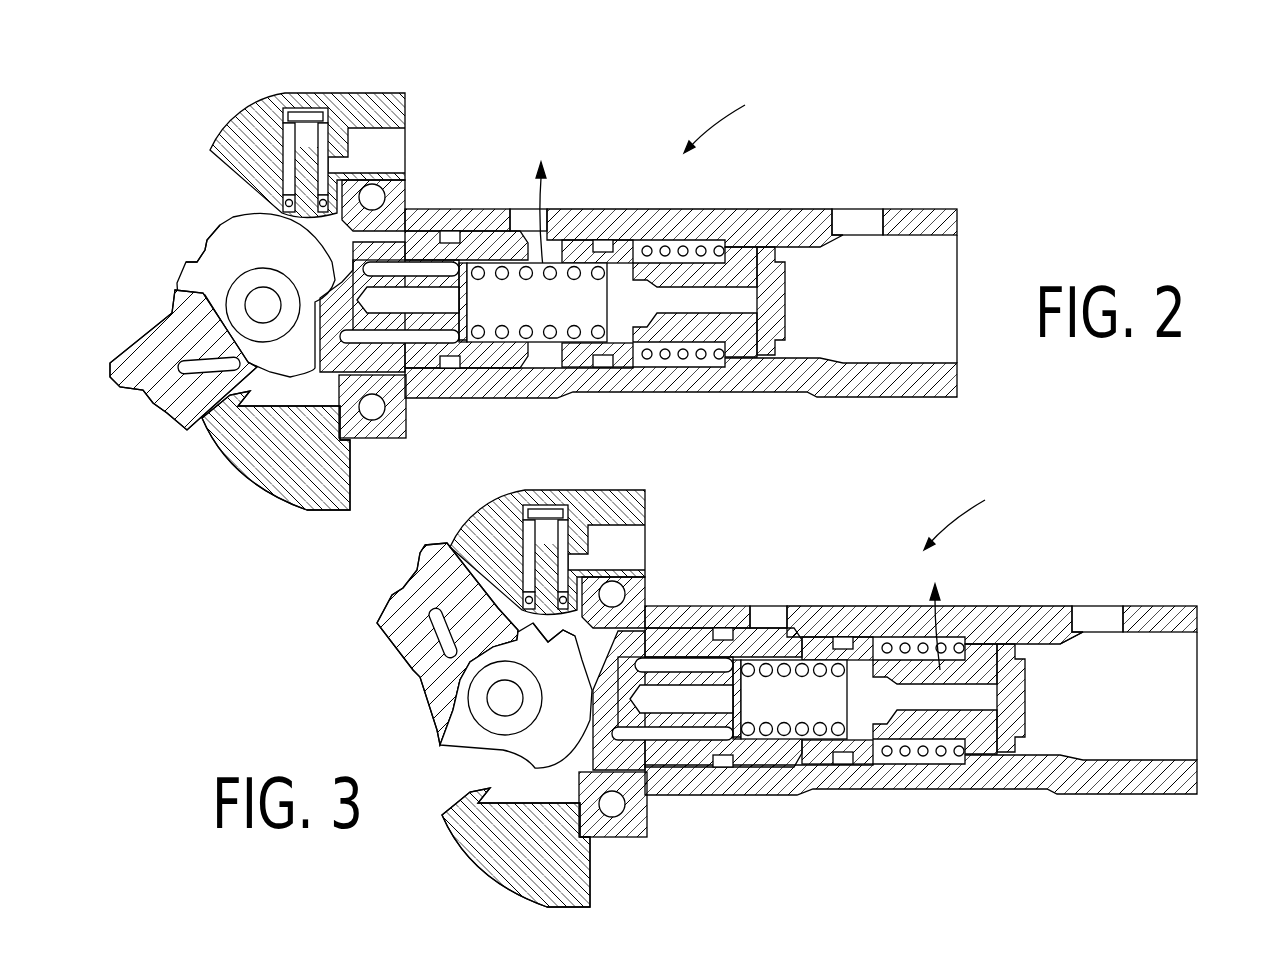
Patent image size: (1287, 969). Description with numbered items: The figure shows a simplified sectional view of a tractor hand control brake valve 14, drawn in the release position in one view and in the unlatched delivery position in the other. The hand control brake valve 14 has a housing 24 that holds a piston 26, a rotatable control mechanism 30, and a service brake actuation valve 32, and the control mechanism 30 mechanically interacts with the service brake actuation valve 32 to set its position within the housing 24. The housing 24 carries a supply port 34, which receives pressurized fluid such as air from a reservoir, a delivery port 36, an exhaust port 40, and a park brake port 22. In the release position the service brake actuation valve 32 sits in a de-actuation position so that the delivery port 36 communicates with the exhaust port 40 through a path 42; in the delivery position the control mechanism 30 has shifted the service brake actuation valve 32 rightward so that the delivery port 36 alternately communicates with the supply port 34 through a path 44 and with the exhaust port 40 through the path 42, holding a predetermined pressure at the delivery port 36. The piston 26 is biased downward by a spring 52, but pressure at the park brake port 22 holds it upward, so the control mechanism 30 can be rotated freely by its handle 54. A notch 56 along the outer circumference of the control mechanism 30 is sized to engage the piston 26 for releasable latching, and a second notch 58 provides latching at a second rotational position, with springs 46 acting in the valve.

In FIG. 2, the hand control brake valve 14 is at (729, 117).
In FIG. 3, the hand control brake valve 14 is at (970, 513).
In FIG. 2, the park brake port 22 is at (398, 137).
In FIG. 3, the park brake port 22 is at (638, 534).
In FIG. 2, the housing 24 is at (942, 210).
In FIG. 3, the housing 24 is at (1182, 607).
In FIG. 2, the piston 26 is at (320, 192).
In FIG. 3, the piston 26 is at (560, 589).
In FIG. 2, the control mechanism 30 is at (176, 285).
In FIG. 3, the control mechanism 30 is at (470, 745).
In FIG. 2, the service brake actuation valve 32 is at (580, 368).
In FIG. 3, the service brake actuation valve 32 is at (820, 765).
In FIG. 2, the supply port 34 is at (858, 210).
In FIG. 3, the supply port 34 is at (1098, 607).
In FIG. 2, the delivery port 36 is at (720, 268).
In FIG. 3, the delivery port 36 is at (960, 665).
In FIG. 2, the exhaust port 40 is at (522, 228).
In FIG. 3, the exhaust port 40 is at (762, 625).
In FIG. 2, the path 42 is at (752, 297).
In FIG. 3, the path 42 is at (790, 699).
In FIG. 3, the path 44 is at (1040, 642).
In FIG. 2, the spring 46 is at (560, 342).
In FIG. 3, the spring 46 is at (800, 739).
In FIG. 2, the spring 52 is at (297, 108).
In FIG. 3, the spring 52 is at (537, 505).
In FIG. 2, the handle 54 is at (165, 398).
In FIG. 3, the handle 54 is at (425, 625).
In FIG. 2, the notch 56 is at (196, 262).
In FIG. 3, the notch 56 is at (548, 642).
In FIG. 2, the second notch 58 is at (222, 233).
In FIG. 3, the second notch 58 is at (672, 698).